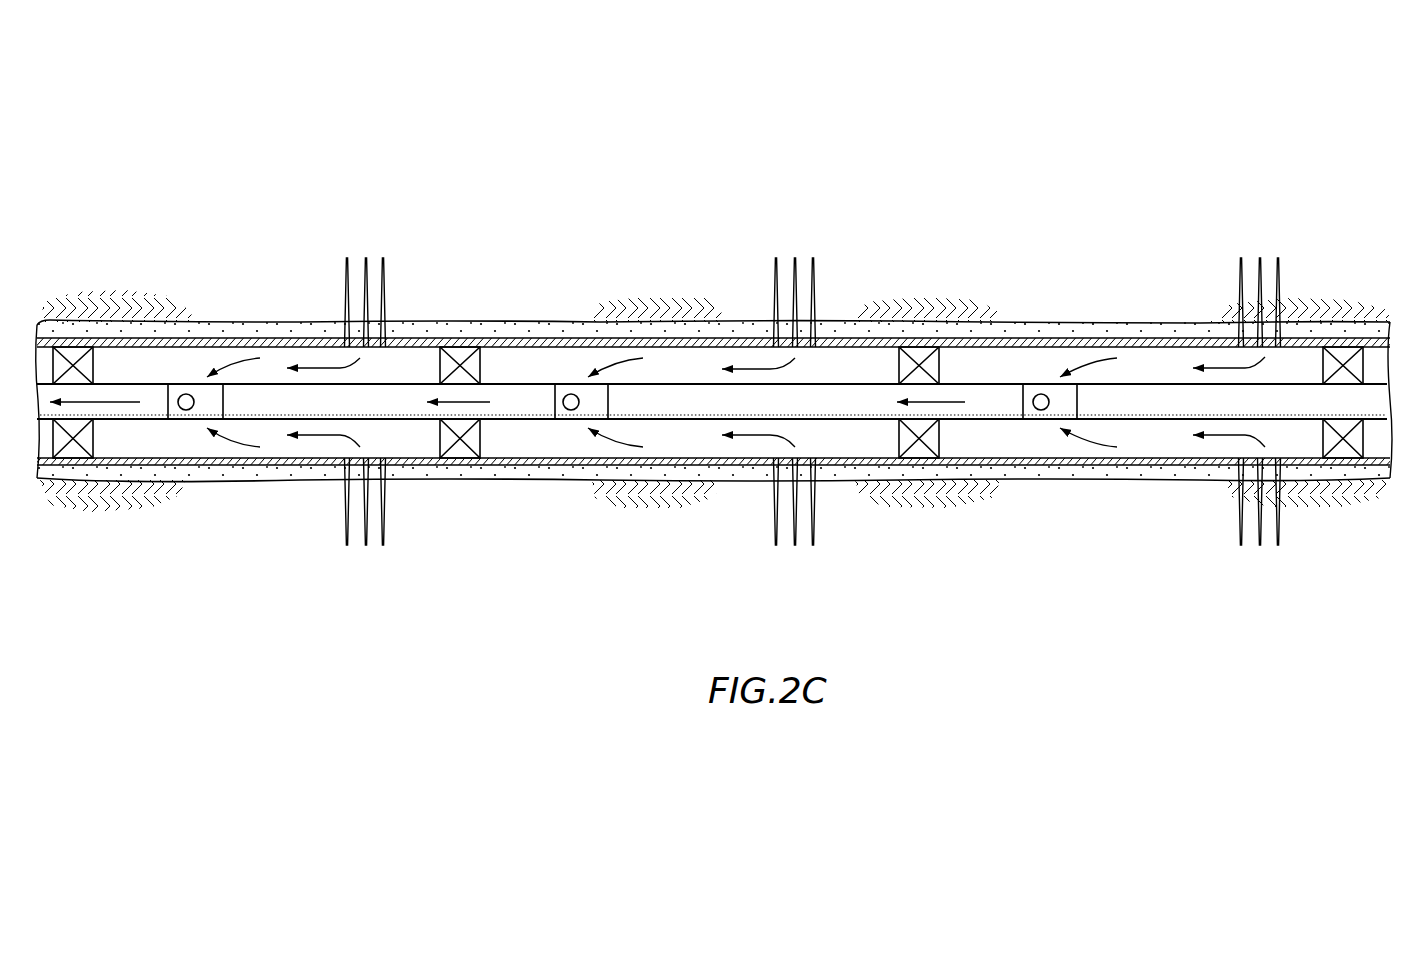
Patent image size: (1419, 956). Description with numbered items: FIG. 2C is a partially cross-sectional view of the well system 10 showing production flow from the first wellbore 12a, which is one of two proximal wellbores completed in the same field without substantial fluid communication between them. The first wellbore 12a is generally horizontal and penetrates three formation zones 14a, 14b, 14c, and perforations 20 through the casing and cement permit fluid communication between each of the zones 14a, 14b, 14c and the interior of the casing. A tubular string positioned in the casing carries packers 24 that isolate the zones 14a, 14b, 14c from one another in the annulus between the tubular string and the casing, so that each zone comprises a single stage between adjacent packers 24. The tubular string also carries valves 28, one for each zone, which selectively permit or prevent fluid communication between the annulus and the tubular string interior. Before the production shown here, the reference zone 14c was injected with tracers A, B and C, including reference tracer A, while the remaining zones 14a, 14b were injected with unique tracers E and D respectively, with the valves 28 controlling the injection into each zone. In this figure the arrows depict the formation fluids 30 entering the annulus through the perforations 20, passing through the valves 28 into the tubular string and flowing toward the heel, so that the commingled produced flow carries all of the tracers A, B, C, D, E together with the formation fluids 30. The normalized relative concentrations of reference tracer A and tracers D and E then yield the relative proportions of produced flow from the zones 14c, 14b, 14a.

The well system 10 is at (1265, 65).
The first wellbore 12a is at (607, 458).
The formation zone 14a is at (1265, 185).
The formation zone 14b is at (795, 185).
The formation zone 14c is at (366, 182).
The perforations 20 is at (388, 290).
The packers 24 is at (93, 440).
The valves 28 is at (183, 384).
The formation fluids 30 is at (328, 368).